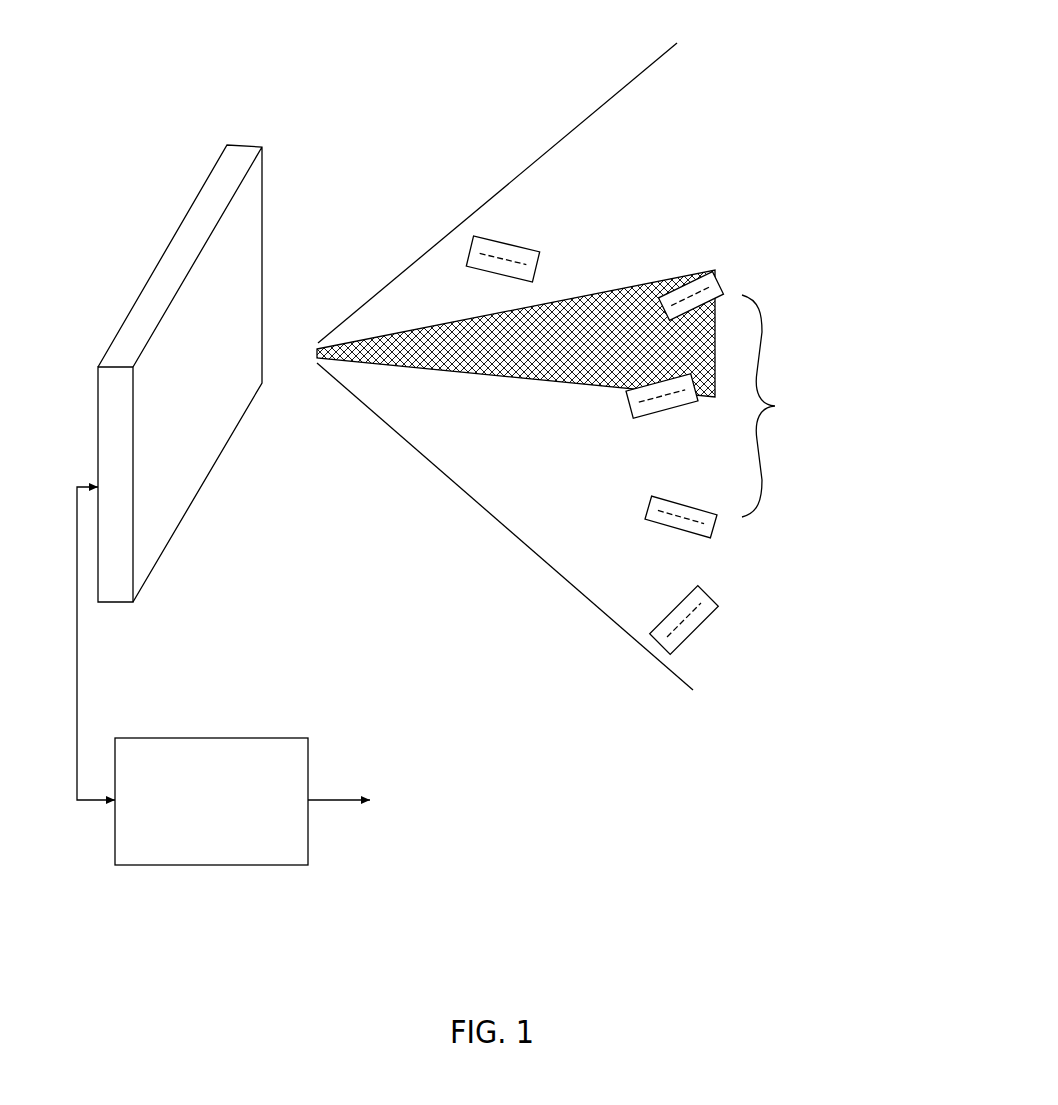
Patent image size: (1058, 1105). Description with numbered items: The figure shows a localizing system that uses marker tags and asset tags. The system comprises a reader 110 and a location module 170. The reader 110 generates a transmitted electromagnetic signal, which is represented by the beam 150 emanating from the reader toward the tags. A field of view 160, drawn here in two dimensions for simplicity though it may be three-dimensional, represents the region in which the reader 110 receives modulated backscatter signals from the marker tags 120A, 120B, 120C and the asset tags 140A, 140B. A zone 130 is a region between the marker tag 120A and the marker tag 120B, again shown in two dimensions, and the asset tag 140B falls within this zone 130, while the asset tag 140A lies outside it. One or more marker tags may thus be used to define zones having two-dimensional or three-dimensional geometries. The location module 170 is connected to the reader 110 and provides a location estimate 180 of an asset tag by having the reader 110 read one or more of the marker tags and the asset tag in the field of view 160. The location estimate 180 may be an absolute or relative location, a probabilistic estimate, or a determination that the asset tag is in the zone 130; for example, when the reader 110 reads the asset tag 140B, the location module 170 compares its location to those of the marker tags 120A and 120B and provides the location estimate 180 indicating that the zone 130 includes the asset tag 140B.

The reader 110 is at (203, 186).
The field of view (FOV) 160 is at (351, 457).
The beam 150 is at (428, 371).
The asset tag 140A is at (507, 235).
The asset tag 140B is at (688, 442).
The marker tag 120A is at (677, 282).
The marker tag 120B is at (685, 535).
The marker tag 120C is at (685, 638).
The zone 130 is at (798, 406).
The location module 170 is at (194, 837).
The location estimate 180 is at (474, 801).